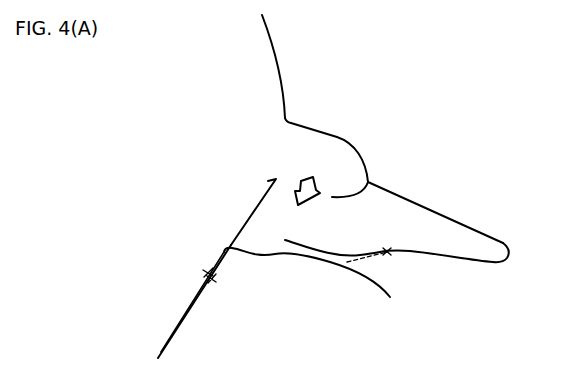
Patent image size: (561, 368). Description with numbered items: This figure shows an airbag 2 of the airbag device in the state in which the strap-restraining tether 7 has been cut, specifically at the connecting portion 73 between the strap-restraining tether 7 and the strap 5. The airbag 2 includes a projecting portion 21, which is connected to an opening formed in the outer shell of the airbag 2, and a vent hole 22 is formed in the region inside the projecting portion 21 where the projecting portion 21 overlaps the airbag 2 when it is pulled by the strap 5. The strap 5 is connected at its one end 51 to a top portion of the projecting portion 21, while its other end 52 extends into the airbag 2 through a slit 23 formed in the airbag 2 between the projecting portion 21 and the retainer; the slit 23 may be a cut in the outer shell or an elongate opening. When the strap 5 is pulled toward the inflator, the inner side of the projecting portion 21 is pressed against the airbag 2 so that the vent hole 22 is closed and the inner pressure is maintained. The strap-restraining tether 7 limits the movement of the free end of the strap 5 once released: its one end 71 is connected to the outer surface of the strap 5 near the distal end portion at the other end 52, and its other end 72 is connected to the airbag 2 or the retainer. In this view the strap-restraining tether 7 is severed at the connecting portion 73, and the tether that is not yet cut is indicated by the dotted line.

The airbag 2 is at (269, 38).
The projecting portion 21 is at (345, 138).
The vent hole 22 is at (284, 174).
The slit 23 is at (222, 238).
The strap 5 is at (512, 255).
The one end of the strap 51 is at (388, 175).
The other end of the strap 52 is at (304, 237).
The strap-restraining tether 7 is at (247, 257).
The one end of the strap-restraining tether 71 is at (373, 294).
The other end of the strap-restraining tether 72 is at (190, 268).
The connecting portion 73 is at (393, 266).